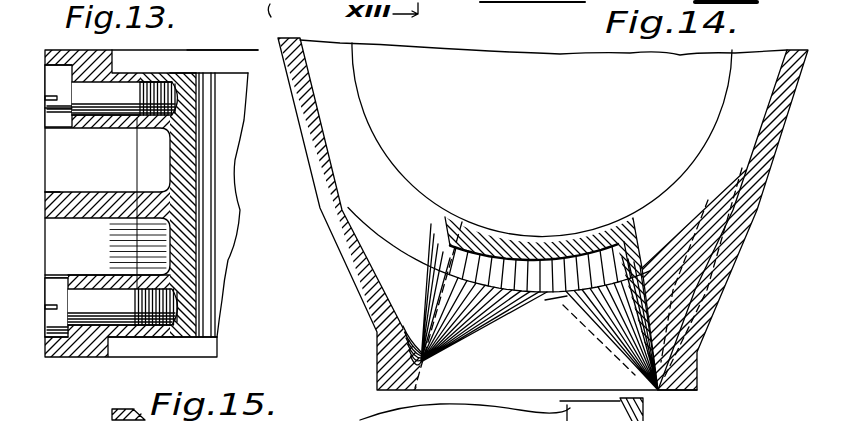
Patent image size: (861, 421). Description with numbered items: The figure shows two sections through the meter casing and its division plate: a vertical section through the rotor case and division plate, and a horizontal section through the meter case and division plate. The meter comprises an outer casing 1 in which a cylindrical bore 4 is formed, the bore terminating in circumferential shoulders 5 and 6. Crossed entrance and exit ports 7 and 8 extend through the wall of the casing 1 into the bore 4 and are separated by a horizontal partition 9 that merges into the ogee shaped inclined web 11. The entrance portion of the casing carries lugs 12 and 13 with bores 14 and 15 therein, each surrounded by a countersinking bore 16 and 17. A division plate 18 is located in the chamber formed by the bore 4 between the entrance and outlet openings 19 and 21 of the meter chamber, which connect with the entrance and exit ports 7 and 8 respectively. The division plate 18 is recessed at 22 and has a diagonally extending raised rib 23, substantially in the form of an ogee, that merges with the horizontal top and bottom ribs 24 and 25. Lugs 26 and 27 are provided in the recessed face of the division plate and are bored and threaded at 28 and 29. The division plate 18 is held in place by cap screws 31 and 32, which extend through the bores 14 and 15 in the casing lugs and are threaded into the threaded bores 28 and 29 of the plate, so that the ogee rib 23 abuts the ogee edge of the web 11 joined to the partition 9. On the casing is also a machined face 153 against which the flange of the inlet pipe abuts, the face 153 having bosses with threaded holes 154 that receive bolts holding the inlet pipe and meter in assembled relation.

In FIG. 14, the outer casing 1 is at (752, 231).
In FIG. 14, the cylindrical bore 4 is at (783, 89).
In FIG. 13, the circumferential shoulder 5 is at (116, 70).
In FIG. 13, the circumferential shoulder 6 is at (127, 333).
In FIG. 13, the entrance port 7 is at (80, 176).
In FIG. 13, the exit port 8 is at (68, 251).
In FIG. 13, the horizontal partition 9 is at (45, 199).
In FIG. 14, the ogee shaped inclined web 11 is at (567, 296).
In FIG. 13, the lug 12 is at (127, 124).
In FIG. 13, the lug 13 is at (106, 266).
In FIG. 13, the bore 14 is at (82, 56).
In FIG. 13, the bore 15 is at (80, 337).
In FIG. 13, the countersinking bore 16 is at (47, 53).
In FIG. 13, the countersinking bore 17 is at (55, 347).
In FIG. 13, the division plate 18 is at (187, 194).
In FIG. 14, the division plate 18 is at (568, 237).
In FIG. 14, the entrance opening 19 is at (388, 268).
In FIG. 14, the outlet opening 21 is at (674, 268).
In FIG. 13, the recess 22 is at (152, 164).
In FIG. 14, the raised rib 23 is at (520, 278).
In FIG. 13, the top rib 24 is at (157, 73).
In FIG. 13, the bottom rib 25 is at (138, 337).
In FIG. 14, the bottom rib 25 is at (578, 292).
In FIG. 13, the lug 26 is at (187, 63).
In FIG. 13, the lug 27 is at (153, 338).
In FIG. 13, the threaded bore 28 is at (190, 51).
In FIG. 13, the threaded bore 29 is at (192, 353).
In FIG. 13, the cap screw 31 is at (58, 114).
In FIG. 13, the cap screw 32 is at (53, 288).
In FIG. 14, the machined face 153 is at (676, 393).
In FIG. 14, the threaded hole 154 is at (285, 13).